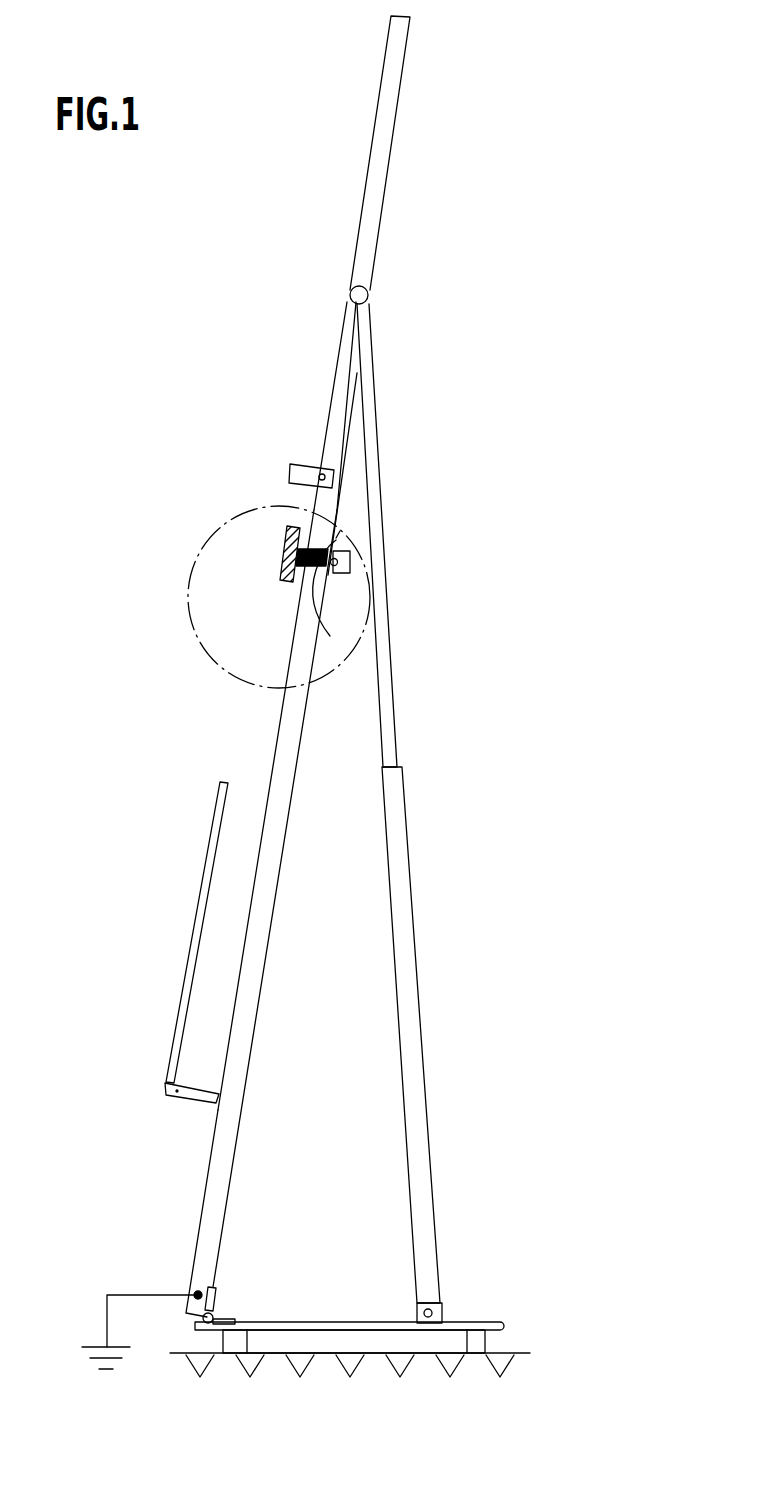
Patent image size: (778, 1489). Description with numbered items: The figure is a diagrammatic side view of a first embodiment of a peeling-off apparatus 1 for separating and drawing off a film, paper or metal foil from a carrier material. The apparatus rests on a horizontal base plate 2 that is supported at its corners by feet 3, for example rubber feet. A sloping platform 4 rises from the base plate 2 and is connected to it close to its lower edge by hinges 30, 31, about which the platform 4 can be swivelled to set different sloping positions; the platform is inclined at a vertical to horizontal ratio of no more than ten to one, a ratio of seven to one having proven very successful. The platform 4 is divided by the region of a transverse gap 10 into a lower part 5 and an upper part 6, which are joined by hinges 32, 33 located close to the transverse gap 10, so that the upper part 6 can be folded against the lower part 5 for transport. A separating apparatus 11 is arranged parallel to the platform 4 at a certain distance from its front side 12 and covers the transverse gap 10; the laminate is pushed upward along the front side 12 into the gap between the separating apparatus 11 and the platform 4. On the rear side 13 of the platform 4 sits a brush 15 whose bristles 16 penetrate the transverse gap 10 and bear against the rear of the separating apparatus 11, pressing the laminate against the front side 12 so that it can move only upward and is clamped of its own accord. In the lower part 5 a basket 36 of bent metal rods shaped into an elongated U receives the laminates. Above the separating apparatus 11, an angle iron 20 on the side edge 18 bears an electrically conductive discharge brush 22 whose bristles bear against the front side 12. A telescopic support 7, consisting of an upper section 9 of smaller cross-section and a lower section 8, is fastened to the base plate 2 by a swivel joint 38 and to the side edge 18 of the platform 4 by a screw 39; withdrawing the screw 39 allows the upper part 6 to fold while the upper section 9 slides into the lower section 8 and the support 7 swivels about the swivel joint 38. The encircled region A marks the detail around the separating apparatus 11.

The peeling-off apparatus 1 is at (80, 468).
The base plate 2 is at (453, 1322).
The feet 3 is at (223, 1345).
The sloping platform 4 is at (262, 718).
The lower part of the platform 5 is at (207, 1191).
The upper part of the platform 6 is at (340, 388).
The support 7 is at (428, 803).
The lower section of the support 8 is at (402, 848).
The upper section of the support 9 is at (373, 473).
The transverse gap 10 is at (334, 599).
The separating apparatus 11 is at (282, 550).
The front side of the platform 12 is at (327, 423).
The rear side of the platform 13 is at (347, 452).
The brush 15 is at (352, 556).
The bristles 16 is at (343, 533).
The side edge of the platform 18 is at (378, 211).
The angle iron 20 is at (300, 482).
The discharge brush 22 is at (272, 450).
The hinge 30 is at (256, 1276).
The hinge 31 is at (215, 1312).
The hinge 32 is at (398, 585).
The hinge 33 is at (348, 567).
The basket 36 is at (198, 923).
The swivel joint 38 is at (420, 1304).
The screw 39 is at (370, 295).
The detail region A is at (190, 620).